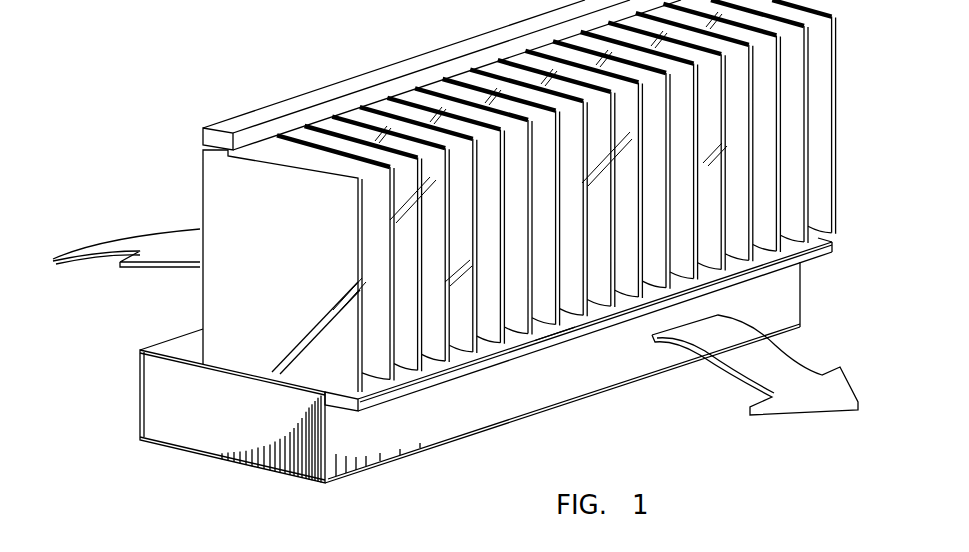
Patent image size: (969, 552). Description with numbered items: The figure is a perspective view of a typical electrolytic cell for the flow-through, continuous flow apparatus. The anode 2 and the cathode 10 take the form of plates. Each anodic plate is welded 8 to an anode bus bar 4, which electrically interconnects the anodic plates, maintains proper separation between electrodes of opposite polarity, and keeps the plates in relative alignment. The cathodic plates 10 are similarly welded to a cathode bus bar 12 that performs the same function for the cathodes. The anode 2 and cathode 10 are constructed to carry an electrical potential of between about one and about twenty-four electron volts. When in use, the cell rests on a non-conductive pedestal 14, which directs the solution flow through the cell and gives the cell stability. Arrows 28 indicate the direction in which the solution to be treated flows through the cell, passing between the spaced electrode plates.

The anode 2 is at (453, 238).
The anode bus bar 4 is at (387, 397).
The weld 8 is at (568, 322).
The cathode 10 is at (765, 202).
The cathode bus bar 12 is at (386, 76).
The non-conductive pedestal 14 is at (775, 302).
The arrows 28 is at (181, 259).